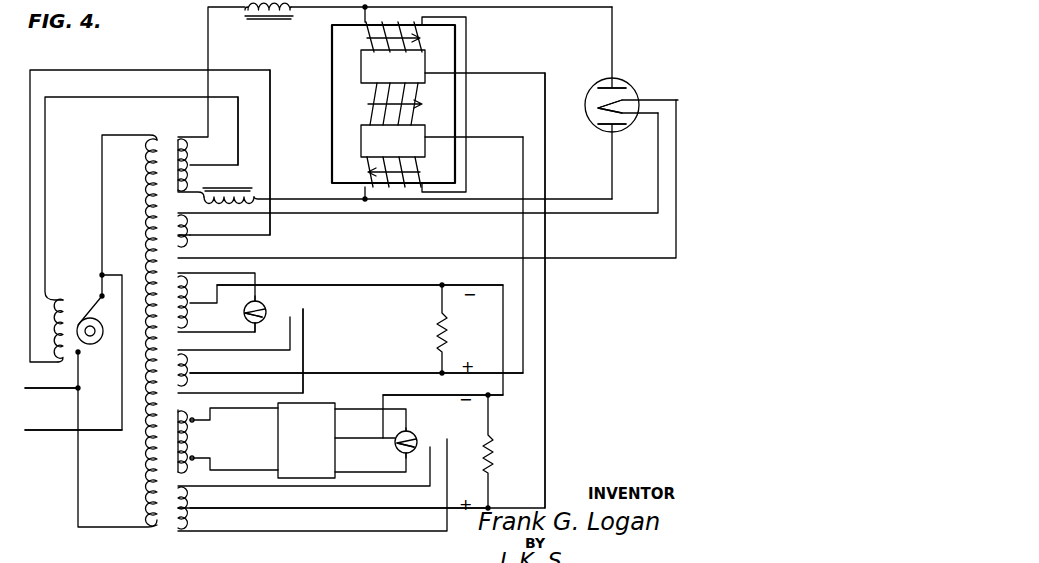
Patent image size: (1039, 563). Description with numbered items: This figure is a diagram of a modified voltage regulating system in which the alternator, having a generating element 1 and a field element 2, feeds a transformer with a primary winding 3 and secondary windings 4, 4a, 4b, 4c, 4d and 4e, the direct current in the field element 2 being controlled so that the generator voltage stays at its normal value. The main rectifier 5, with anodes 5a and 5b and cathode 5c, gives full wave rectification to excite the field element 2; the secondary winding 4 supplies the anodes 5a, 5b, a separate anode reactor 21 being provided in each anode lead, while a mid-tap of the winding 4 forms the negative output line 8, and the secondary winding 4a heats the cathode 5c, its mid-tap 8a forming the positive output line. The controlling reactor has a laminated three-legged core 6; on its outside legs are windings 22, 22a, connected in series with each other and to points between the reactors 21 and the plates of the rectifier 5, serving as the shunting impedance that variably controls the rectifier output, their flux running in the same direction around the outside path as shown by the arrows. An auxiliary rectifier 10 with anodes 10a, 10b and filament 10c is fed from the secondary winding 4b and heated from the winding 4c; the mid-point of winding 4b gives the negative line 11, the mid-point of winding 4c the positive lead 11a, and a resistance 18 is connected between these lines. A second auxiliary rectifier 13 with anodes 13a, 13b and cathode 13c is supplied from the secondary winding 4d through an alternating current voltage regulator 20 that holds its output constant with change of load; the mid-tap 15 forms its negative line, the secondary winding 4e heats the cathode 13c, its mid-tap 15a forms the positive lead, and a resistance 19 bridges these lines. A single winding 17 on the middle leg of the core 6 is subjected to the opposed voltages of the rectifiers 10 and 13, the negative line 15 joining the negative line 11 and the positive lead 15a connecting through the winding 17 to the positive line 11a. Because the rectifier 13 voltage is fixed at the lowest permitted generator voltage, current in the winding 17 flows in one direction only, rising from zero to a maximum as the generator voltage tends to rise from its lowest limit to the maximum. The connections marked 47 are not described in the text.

The generating element 1 is at (97, 316).
The field element 2 is at (66, 306).
The primary winding 3 is at (142, 228).
The secondary winding 4 is at (191, 151).
The secondary winding 4a is at (190, 225).
The secondary winding 4b is at (190, 288).
The secondary winding 4c is at (190, 361).
The secondary winding 4d is at (190, 440).
The secondary winding 4e is at (190, 497).
The rectifier 5 is at (588, 86).
The anode 5a is at (622, 86).
The anode 5b is at (620, 128).
The cathode 5c is at (595, 110).
The laminated core 6 is at (332, 51).
The negative output line 8 is at (238, 148).
The mid-tap 8a is at (270, 170).
The auxiliary rectifier 10 is at (248, 297).
The anode 10a is at (262, 304).
The anode 10b is at (258, 322).
The cathode 10c is at (244, 316).
The negative lead 11 is at (348, 285).
The positive lead 11a is at (368, 373).
The auxiliary rectifier 13 is at (398, 434).
The anode 13a is at (412, 434).
The anode 13b is at (409, 452).
The cathode 13c is at (396, 446).
The mid-tap 15 is at (503, 393).
The mid-tap 15a is at (545, 405).
The controlling winding 17 is at (372, 93).
The resistance 18 is at (436, 325).
The resistance 19 is at (494, 452).
The alternating current voltage regulator 20 is at (278, 432).
The anode reactor 21 is at (262, 18).
The winding 22 is at (420, 38).
The winding 22a is at (418, 166).
The supply lines 47 is at (35, 389).